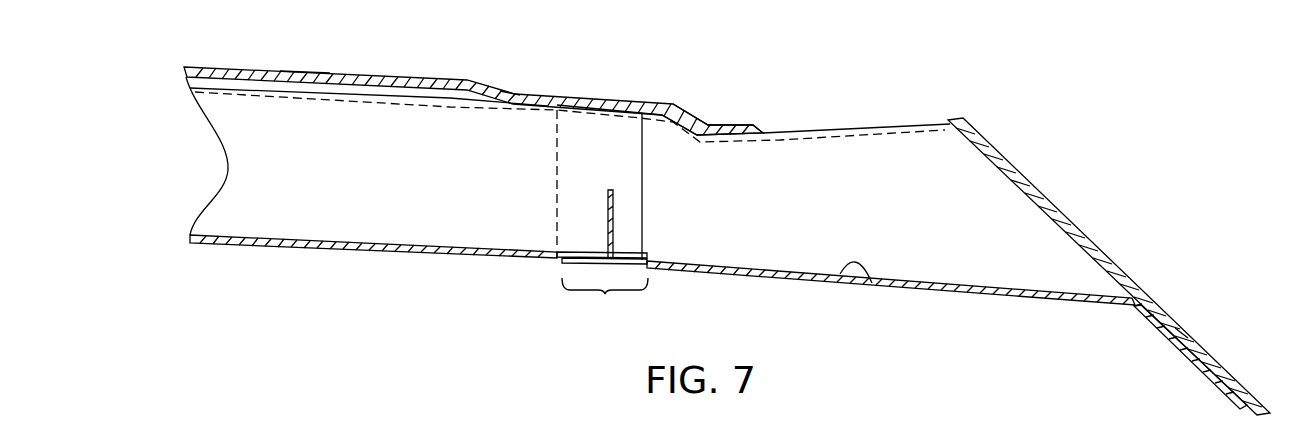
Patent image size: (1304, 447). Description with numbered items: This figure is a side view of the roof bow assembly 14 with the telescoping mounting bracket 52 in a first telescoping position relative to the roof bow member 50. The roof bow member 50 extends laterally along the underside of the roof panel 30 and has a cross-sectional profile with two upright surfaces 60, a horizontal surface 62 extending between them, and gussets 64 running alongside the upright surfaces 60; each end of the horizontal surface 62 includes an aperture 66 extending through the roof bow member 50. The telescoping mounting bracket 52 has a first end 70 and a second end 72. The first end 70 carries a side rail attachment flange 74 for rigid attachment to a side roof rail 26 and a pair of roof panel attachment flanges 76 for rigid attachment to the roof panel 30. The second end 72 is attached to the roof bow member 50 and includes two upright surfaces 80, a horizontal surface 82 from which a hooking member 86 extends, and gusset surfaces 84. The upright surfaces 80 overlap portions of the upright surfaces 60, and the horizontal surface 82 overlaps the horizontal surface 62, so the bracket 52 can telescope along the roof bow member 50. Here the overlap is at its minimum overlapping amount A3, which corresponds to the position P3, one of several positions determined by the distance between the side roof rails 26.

The roof bow assembly 14 is at (507, 60).
The side roof rail 26 is at (1068, 225).
The roof panel 30 is at (352, 73).
The roof bow member 50 is at (294, 70).
The telescoping mounting bracket 52 is at (794, 124).
The upright surface 60 is at (537, 133).
The horizontal surface 62 is at (305, 245).
The gusset 64 is at (602, 112).
The aperture 66 is at (582, 251).
The first end 70 is at (1157, 327).
The second end 72 is at (557, 262).
The side rail attachment flange 74 is at (1177, 330).
The roof panel attachment flange 76 is at (873, 130).
The upright surface 80 is at (740, 242).
The horizontal surface 82 is at (870, 283).
The gusset surface 84 is at (662, 118).
The hooking member 86 is at (607, 193).
The position P3 is at (218, 153).
The minimum overlapping amount A3 is at (602, 217).